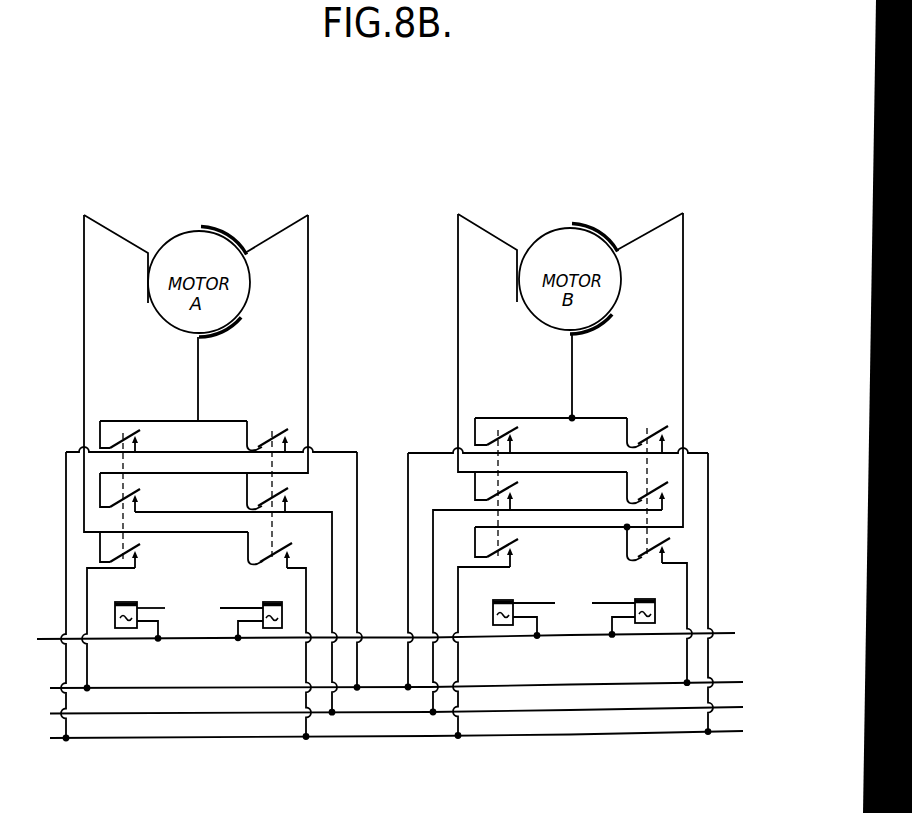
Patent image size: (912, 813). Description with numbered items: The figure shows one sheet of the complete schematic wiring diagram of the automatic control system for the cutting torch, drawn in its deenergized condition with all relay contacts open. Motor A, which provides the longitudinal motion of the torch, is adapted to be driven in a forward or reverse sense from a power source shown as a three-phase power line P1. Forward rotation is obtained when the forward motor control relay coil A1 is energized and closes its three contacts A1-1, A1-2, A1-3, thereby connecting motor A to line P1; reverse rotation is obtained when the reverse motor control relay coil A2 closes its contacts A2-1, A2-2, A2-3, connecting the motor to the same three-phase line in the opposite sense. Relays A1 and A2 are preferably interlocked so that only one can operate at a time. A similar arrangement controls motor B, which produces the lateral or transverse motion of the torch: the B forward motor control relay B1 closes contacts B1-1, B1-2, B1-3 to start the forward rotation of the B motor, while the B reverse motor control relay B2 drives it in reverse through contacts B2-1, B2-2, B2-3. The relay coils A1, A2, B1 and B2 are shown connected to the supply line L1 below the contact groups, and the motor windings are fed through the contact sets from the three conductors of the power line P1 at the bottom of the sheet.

The forward motor control relay contact A1-1 is at (134, 437).
The forward motor control relay contact A1-2 is at (134, 492).
The forward motor control relay contact A1-3 is at (134, 550).
The reverse motor control relay contact A2-1 is at (254, 550).
The reverse motor control relay contact A2-2 is at (251, 492).
The reverse motor control relay contact A2-3 is at (251, 437).
The forward motor control relay coil A1 is at (129, 601).
The reverse motor control relay coil A2 is at (266, 601).
The B forward motor control relay contact B1-1 is at (510, 547).
The B forward motor control relay contact B1-2 is at (510, 491).
The B forward motor control relay contact B1-3 is at (510, 435).
The B reverse motor control relay contact B2-1 is at (632, 435).
The B reverse motor control relay contact B2-2 is at (630, 491).
The B reverse motor control relay contact B2-3 is at (632, 545).
The B forward motor control relay B1 is at (507, 599).
The B reverse motor control relay B2 is at (642, 598).
The line L1 is at (60, 637).
The three-phase power line P1 is at (50, 673).